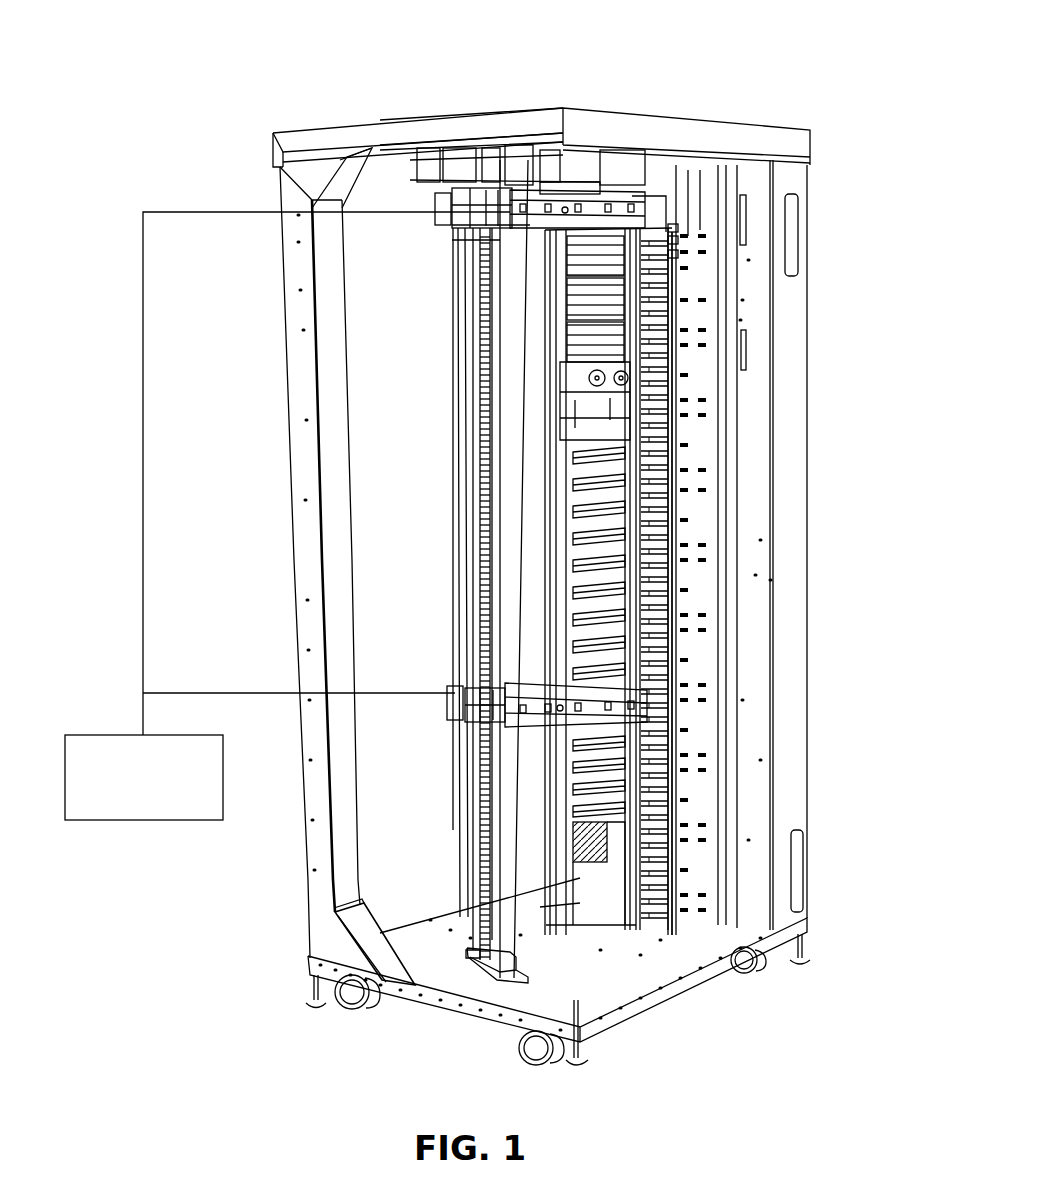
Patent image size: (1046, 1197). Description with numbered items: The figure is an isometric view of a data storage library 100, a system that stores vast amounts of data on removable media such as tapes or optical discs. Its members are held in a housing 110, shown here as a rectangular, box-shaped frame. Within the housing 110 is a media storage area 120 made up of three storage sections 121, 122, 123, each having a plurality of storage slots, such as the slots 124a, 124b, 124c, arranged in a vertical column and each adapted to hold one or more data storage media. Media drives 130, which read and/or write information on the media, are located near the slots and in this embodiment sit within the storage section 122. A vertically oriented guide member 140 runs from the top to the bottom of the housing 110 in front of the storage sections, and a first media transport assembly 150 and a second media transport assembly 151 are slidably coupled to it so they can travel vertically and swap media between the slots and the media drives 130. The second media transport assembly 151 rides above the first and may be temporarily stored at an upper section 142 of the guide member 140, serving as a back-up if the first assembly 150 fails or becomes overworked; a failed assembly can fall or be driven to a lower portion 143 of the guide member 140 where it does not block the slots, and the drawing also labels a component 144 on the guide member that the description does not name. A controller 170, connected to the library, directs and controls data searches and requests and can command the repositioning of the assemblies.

The data storage library 100 is at (784, 60).
The housing 110 is at (315, 922).
The media storage area 120 is at (666, 492).
The storage section 121 is at (525, 259).
The storage section 122 is at (555, 300).
The storage section 123 is at (607, 330).
The storage slot 124a is at (672, 228).
The storage slot 124b is at (672, 240).
The storage slot 124c is at (672, 255).
The media drive 130 is at (572, 564).
The guide member 140 is at (470, 950).
The upper section 142 is at (440, 200).
The lower portion 143 is at (515, 978).
The lower carriage 144 is at (547, 705).
The first media transport assembly 150 is at (675, 638).
The second media transport assembly 151 is at (640, 200).
The controller 170 is at (143, 820).